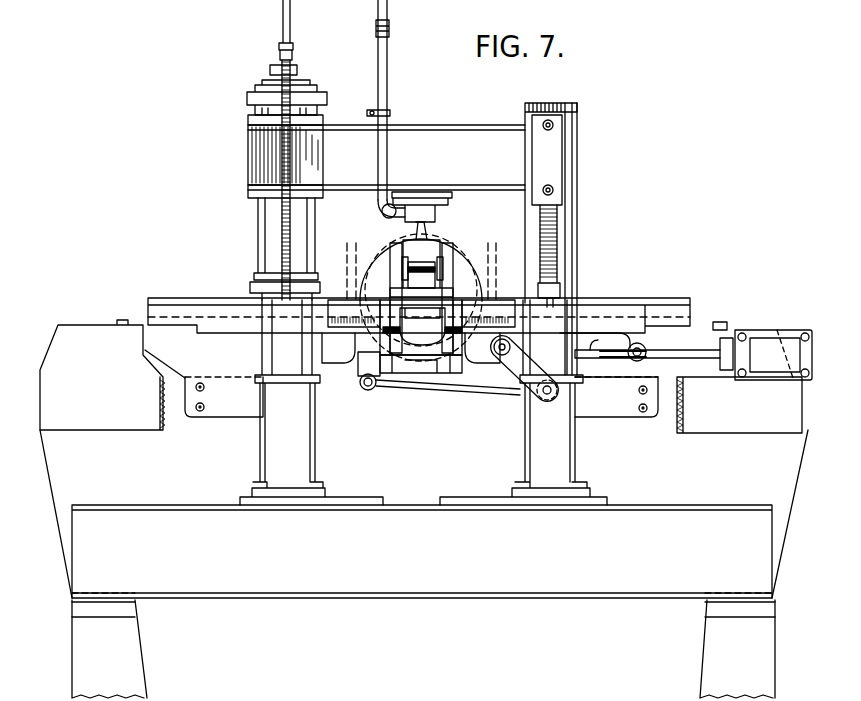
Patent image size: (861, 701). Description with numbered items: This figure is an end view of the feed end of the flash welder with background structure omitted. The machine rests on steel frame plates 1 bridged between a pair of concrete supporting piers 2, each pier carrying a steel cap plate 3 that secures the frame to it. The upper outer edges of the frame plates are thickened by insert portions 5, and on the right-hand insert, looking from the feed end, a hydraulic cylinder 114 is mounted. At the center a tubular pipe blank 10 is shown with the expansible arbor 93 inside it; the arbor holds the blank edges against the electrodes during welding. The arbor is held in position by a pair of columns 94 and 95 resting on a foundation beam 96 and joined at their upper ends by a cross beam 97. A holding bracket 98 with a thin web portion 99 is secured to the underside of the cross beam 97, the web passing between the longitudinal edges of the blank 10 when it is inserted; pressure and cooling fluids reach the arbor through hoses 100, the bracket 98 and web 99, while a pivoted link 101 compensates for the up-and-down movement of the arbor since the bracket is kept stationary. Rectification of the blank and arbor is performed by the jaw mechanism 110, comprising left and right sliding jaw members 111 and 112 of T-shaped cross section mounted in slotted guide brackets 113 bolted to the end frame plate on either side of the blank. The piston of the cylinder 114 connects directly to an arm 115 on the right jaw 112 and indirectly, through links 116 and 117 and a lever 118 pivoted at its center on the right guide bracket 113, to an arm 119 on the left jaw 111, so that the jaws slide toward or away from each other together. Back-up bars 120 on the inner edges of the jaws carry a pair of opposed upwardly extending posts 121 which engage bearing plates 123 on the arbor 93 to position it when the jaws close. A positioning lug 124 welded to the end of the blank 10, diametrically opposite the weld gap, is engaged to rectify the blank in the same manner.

The frame plate 1 is at (64, 497).
The concrete supporting pier 2 is at (147, 672).
The steel cap plate 3 is at (137, 608).
The insert portion 5 is at (92, 337).
The tubular pipe blank 10 is at (437, 260).
The expansible arbor 93 is at (437, 268).
The column 94 is at (257, 220).
The column 95 is at (577, 232).
The foundation beam 96 is at (390, 592).
The cross beam 97 is at (430, 127).
The holding bracket 98 is at (422, 207).
The web portion 99 is at (398, 216).
The hose 100 is at (388, 62).
The pivoted link 101 is at (388, 325).
The jaw mechanism 110 is at (446, 365).
The left sliding jaw member 111 is at (345, 313).
The right sliding jaw member 112 is at (492, 313).
The guide bracket 113 is at (225, 297).
The hydraulic cylinder 114 is at (765, 343).
The arm 115 is at (648, 337).
The link 116 is at (600, 356).
The link 117 is at (440, 389).
The lever 118 is at (497, 377).
The arm 119 is at (369, 391).
The back-up bar 120 is at (370, 369).
The post 121 is at (394, 265).
The bearing plate 123 is at (437, 245).
The positioning lug 124 is at (422, 327).